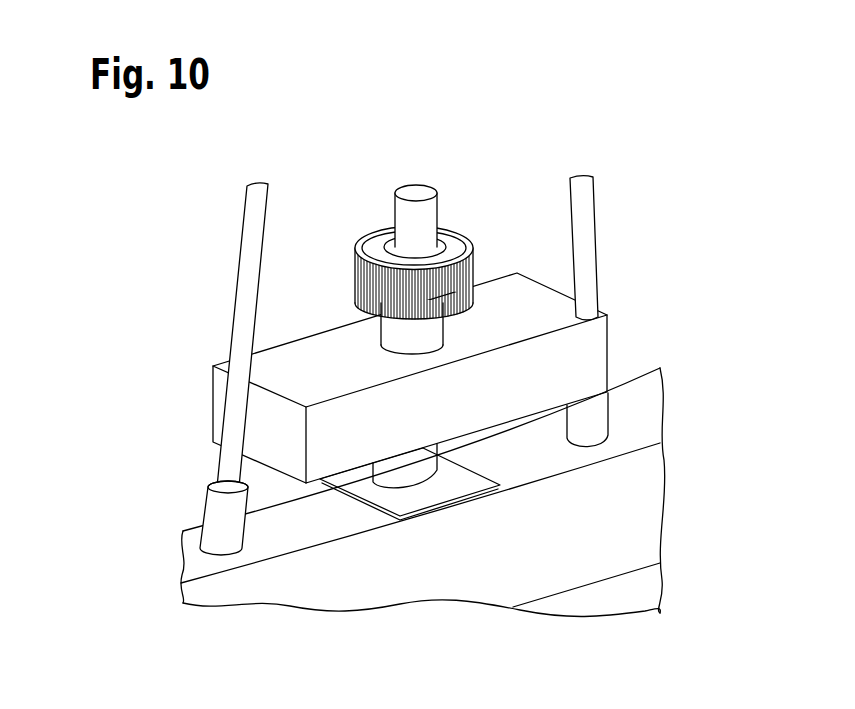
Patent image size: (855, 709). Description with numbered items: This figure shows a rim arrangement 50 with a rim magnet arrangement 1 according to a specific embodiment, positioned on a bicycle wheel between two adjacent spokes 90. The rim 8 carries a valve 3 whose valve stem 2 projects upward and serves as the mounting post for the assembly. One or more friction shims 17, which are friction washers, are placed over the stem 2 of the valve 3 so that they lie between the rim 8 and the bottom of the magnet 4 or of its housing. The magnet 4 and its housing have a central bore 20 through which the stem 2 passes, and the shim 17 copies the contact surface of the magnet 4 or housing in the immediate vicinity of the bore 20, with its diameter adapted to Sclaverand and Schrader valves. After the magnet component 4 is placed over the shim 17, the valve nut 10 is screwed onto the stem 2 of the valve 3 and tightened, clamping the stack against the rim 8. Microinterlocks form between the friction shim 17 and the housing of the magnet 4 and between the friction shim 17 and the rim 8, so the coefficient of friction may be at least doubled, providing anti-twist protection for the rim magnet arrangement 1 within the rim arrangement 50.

The rim magnet arrangement 1 is at (707, 147).
The rim arrangement 50 is at (752, 175).
The spokes 90 is at (257, 220).
The valve stem 2 is at (427, 217).
The valve 3 is at (388, 214).
The valve nut 10 is at (477, 270).
The central bore 20 is at (405, 347).
The magnet 4 is at (600, 343).
The friction shim 17 is at (463, 486).
The rim 8 is at (610, 540).